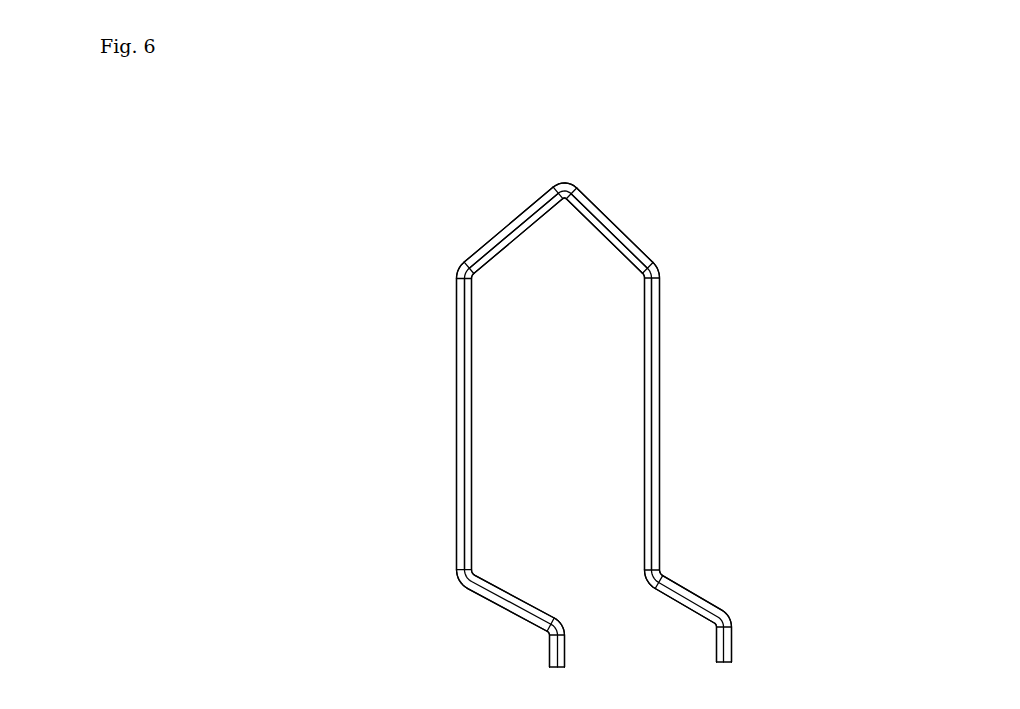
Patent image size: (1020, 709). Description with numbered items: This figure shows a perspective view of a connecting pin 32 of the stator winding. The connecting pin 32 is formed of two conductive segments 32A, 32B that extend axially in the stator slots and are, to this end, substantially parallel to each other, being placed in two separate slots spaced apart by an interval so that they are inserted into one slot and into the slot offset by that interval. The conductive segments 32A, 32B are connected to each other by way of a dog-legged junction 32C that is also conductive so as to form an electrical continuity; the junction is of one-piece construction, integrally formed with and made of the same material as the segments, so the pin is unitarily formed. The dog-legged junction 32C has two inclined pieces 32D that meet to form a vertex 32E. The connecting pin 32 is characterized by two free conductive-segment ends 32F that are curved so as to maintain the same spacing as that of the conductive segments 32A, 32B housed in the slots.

The connecting pin 32 is at (296, 273).
The conductive segment 32A is at (470, 417).
The conductive segment 32B is at (643, 423).
The dog-legged junction 32C is at (617, 198).
The inclined pieces 32D is at (503, 235).
The vertex 32E is at (567, 187).
The free conductive-segment ends 32F is at (510, 602).